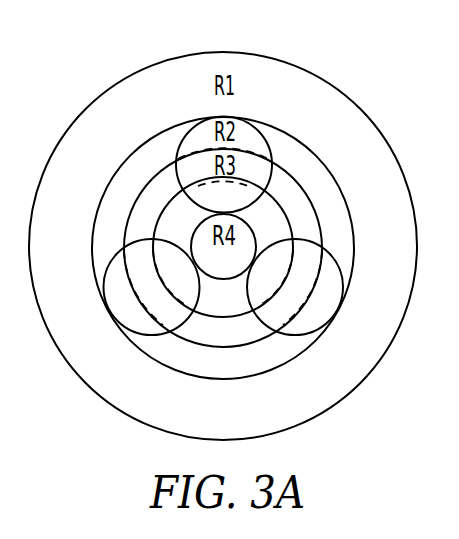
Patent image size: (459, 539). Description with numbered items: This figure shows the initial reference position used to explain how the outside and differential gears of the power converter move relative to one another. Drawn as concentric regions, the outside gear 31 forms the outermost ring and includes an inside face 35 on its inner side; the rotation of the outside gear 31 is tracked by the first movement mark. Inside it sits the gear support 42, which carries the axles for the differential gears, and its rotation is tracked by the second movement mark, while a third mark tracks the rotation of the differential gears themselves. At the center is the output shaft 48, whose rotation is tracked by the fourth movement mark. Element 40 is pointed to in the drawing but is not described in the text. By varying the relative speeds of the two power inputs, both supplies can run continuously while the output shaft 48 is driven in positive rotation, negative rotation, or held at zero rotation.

The outside gear 31 is at (311, 71).
The inside face 35 is at (303, 143).
The gear support 42 is at (298, 185).
The circular rod region (R2/R3) 40 is at (175, 152).
The output shaft 48 is at (191, 232).